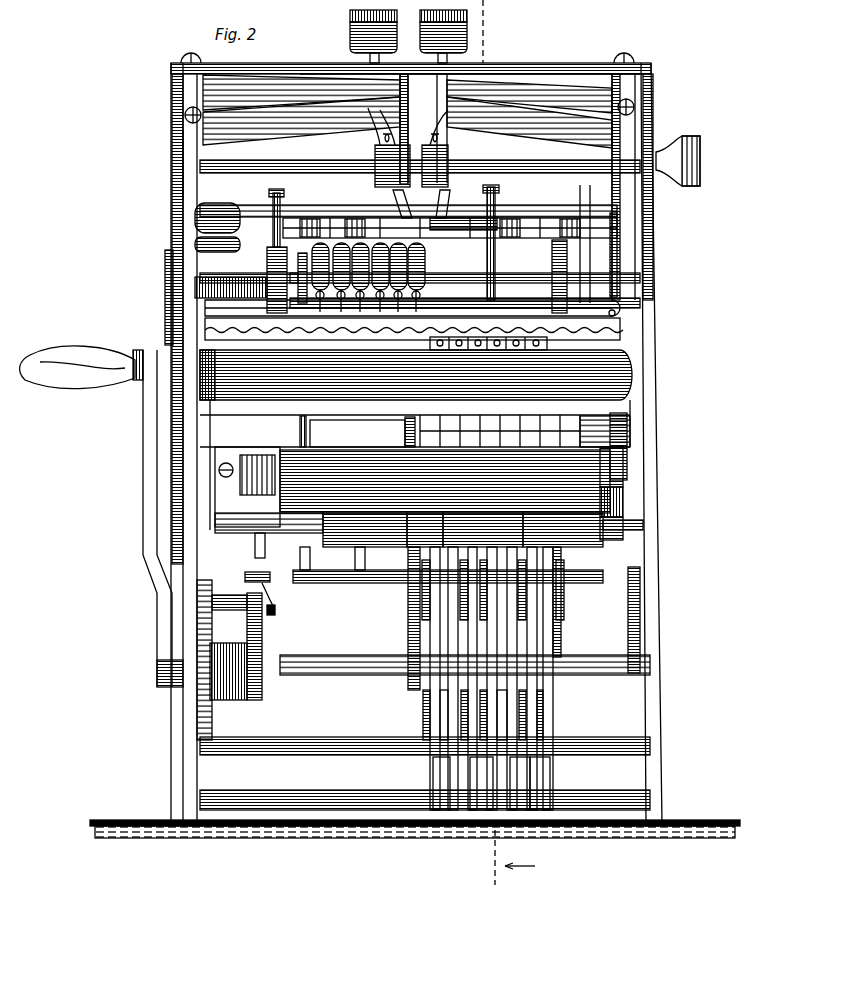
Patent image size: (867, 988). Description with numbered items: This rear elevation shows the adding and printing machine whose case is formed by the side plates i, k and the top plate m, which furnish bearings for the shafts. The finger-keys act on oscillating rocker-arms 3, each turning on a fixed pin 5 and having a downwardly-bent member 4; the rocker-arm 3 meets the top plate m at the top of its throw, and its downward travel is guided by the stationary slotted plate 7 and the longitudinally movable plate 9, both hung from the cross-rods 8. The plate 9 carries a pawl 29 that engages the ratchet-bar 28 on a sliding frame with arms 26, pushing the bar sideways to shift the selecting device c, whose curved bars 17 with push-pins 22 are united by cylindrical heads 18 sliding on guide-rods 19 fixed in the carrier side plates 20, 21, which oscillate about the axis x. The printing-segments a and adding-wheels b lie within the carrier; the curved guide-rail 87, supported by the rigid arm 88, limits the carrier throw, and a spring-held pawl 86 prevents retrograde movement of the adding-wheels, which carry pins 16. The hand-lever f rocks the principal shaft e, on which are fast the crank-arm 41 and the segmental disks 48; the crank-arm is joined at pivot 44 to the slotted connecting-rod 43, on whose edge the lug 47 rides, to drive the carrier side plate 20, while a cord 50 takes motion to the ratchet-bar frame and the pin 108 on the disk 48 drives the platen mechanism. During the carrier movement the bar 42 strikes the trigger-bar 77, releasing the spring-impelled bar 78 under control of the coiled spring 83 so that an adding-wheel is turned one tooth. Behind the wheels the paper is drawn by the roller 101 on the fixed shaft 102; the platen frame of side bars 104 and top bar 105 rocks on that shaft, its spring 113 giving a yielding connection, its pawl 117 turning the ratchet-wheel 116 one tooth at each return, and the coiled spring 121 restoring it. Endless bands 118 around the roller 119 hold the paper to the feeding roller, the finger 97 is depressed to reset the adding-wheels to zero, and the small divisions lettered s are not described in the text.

The printing-segments a is at (385, 45).
The top plate m is at (505, 68).
The side plate k is at (652, 78).
The fixed pin 5 is at (184, 112).
The side plate i is at (172, 144).
The oscillating rocker-arm 3 is at (533, 137).
The stationary slotted plate 7 is at (385, 130).
The slide-plate with inclined slots 9 is at (450, 128).
The stationary cross-rods 8 is at (280, 168).
The downwardly-bent member 4 is at (392, 196).
The cord 50 is at (248, 212).
The arms 26 is at (284, 192).
The ratchet-bar 28 is at (330, 225).
The pawl 29 is at (500, 223).
The selector bars 17 is at (292, 262).
The selecting device c is at (266, 268).
The push-pins 22 is at (425, 272).
The cylindrical heads 18 is at (470, 277).
The guide-rods 19 is at (512, 300).
The finger lever 97 is at (165, 300).
The adding-wheels b is at (410, 340).
The top bar 105 is at (416, 375).
The carrier side plate 20 is at (303, 425).
The rigid arm 88 is at (420, 414).
The axis x is at (333, 442).
The cell s is at (500, 431).
The carrier side plate 21 is at (572, 425).
The spring 113 is at (246, 460).
The paper-feeding roller 101 is at (352, 470).
The roller 119 is at (303, 547).
The endless bands 118 is at (360, 547).
The bar 42 is at (350, 583).
The side bars 104 is at (185, 440).
The spring-held pawl 117 is at (615, 458).
The ratchet-wheel 116 is at (622, 485).
The fixed shaft 102 is at (640, 500).
The coiled spring 121 is at (640, 625).
The hand-lever f is at (143, 495).
The pin 16 is at (255, 565).
The lug 47 is at (245, 577).
The pin 108 is at (229, 604).
The slotted connecting-rod 43 is at (275, 600).
The pivot 44 is at (276, 615).
The crank-arm 41 is at (263, 645).
The segmental disks 48 is at (195, 665).
The principal shaft e is at (340, 658).
The curved guide-rail 87 is at (408, 635).
The spring-held pawl 86 is at (550, 632).
The coiled spring 83 is at (422, 705).
The trigger-bar 77 is at (440, 720).
The spring-impelled bar 78 is at (433, 778).